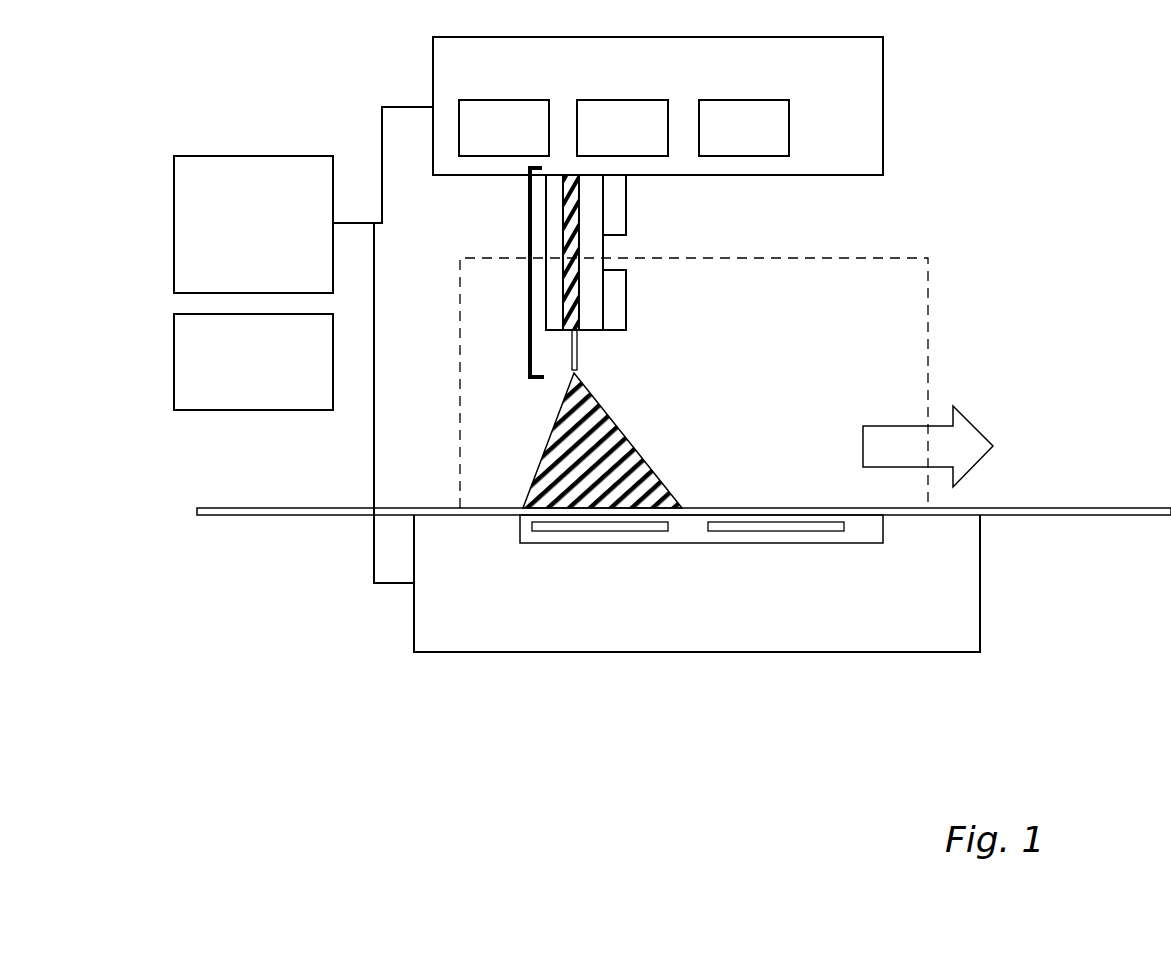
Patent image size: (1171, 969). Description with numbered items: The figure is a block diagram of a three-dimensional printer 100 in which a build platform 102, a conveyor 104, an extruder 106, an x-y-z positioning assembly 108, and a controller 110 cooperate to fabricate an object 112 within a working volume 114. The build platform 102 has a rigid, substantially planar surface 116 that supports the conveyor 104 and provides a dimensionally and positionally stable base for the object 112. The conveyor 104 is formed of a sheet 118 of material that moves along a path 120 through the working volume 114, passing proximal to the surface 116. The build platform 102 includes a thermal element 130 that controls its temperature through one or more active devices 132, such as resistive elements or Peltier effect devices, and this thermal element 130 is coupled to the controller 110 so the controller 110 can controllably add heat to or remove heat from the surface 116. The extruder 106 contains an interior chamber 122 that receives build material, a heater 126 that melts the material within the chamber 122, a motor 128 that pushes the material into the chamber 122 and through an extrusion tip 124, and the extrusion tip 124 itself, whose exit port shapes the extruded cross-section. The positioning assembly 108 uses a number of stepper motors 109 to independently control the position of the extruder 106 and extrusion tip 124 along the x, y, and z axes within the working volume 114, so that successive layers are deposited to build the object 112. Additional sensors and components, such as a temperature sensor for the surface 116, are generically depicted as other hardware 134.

The printer 100 is at (970, 102).
The build platform 102 is at (961, 636).
The conveyor 104 is at (257, 508).
The extruder 106 is at (530, 226).
The x-y-z positioning assembly 108 is at (507, 85).
The stepper motors 109 is at (483, 140).
The controller 110 is at (246, 208).
The object 112 is at (622, 430).
The working volume 114 is at (928, 378).
The surface 116 is at (496, 528).
The sheet 118 is at (1017, 508).
The path 120 is at (914, 460).
The chamber 122 is at (552, 286).
The extrusion tip 124 is at (572, 350).
The heater 126 is at (626, 296).
The motor 128 is at (626, 200).
The thermal element 130 is at (660, 543).
The active devices 132 is at (795, 533).
The other hardware 134 is at (246, 361).